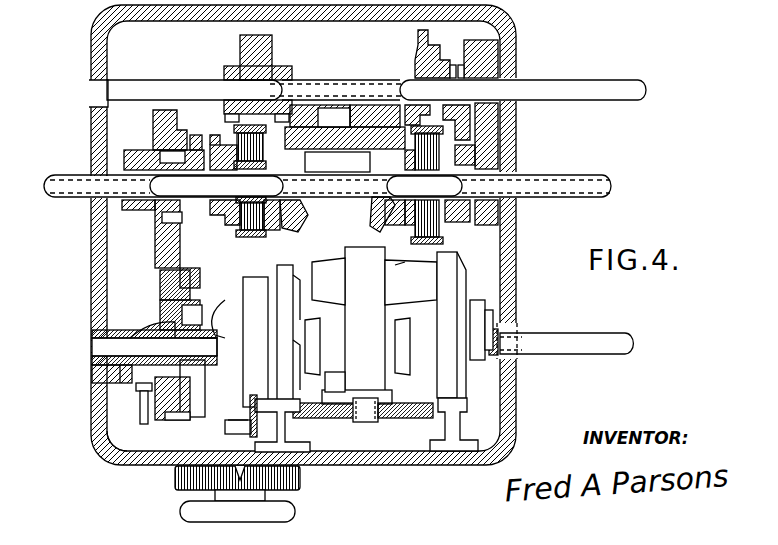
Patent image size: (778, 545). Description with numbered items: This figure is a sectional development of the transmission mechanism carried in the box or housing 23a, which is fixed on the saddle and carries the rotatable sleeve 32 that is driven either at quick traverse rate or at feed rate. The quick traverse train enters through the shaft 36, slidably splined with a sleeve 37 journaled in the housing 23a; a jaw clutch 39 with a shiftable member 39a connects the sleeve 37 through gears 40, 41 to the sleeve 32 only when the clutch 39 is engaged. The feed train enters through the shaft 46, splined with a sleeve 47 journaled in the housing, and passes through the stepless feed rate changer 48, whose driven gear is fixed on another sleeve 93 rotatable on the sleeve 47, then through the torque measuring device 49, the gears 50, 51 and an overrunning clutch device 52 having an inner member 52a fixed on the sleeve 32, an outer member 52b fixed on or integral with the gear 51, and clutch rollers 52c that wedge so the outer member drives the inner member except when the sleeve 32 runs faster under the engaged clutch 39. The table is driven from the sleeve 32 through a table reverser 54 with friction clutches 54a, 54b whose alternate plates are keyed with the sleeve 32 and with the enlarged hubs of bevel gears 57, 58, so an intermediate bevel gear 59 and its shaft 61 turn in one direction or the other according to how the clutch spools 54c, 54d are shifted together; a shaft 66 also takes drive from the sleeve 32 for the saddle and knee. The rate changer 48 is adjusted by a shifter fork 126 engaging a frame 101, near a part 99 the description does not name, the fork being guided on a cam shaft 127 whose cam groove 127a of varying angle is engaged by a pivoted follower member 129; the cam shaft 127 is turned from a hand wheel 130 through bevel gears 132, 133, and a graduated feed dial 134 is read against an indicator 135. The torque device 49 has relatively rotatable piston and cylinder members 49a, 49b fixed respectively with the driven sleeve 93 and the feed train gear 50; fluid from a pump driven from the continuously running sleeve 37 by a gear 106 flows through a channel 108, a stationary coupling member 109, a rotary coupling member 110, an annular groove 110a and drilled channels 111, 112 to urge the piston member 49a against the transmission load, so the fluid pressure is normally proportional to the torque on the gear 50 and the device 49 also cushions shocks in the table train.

The housing 23a is at (520, 232).
The rotatable sleeve 32 is at (346, 198).
The shaft 36 is at (583, 86).
The sleeve 37 is at (322, 80).
The jaw clutch 39 is at (457, 65).
The shiftable member 39a is at (421, 60).
The gear 40 is at (508, 44).
The gear 41 is at (518, 146).
The shaft 46 is at (572, 354).
The sleeve 47 is at (202, 330).
The stepless feed rate changer 48 is at (262, 271).
The torque measuring device 49 is at (188, 297).
The piston member 49a is at (162, 305).
The cylinder member 49b is at (162, 290).
The feed train gear 50 is at (165, 285).
The gear 51 is at (160, 236).
The overrunning clutch device 52 is at (195, 128).
The inner member 52a is at (195, 160).
The outer member 52b is at (178, 150).
The clutch rollers 52c is at (163, 156).
The table reverser 54 is at (251, 228).
The friction clutch 54a is at (252, 138).
The friction clutch 54b is at (411, 128).
The clutch spool 54c is at (238, 222).
The clutch spool 54d is at (440, 224).
The bevel gear 57 is at (296, 232).
The bevel gear 58 is at (372, 228).
The intermediate bevel gear 59 is at (372, 112).
The shaft 61 is at (345, 112).
The shaft 66 is at (594, 175).
The sleeve 93 is at (204, 377).
The cam member 99 is at (402, 268).
The frame 101 is at (357, 325).
The gear 106 is at (283, 66).
The channel 108 is at (146, 392).
The stationary coupling member 109 is at (103, 444).
The rotary coupling member 110 is at (97, 370).
The annular groove 110a is at (100, 416).
The drilled channel 111 is at (97, 331).
The drilled channel 112 is at (158, 330).
The shifter fork 126 is at (388, 368).
The cam shaft 127 is at (328, 418).
The cam groove 127a is at (414, 418).
The pivoted follower member 129 is at (370, 420).
The hand wheel 130 is at (296, 513).
The bevel gear 132 is at (228, 423).
The bevel gear 133 is at (250, 412).
The graduated feed dial 134 is at (176, 481).
The indicator 135 is at (266, 475).